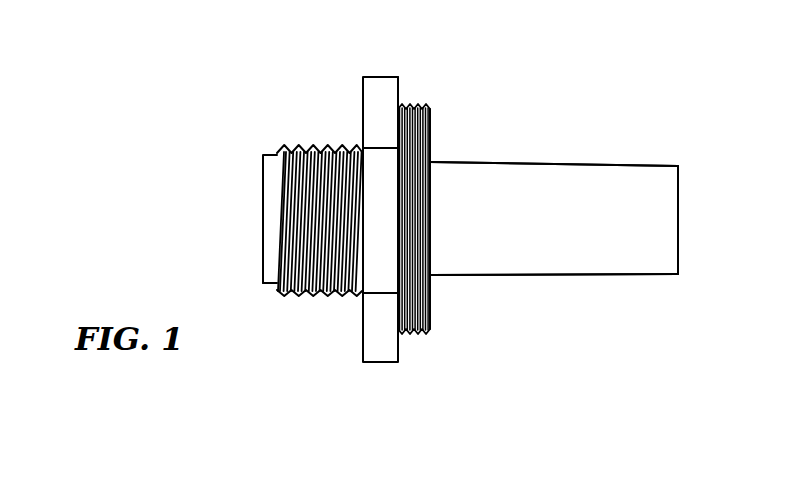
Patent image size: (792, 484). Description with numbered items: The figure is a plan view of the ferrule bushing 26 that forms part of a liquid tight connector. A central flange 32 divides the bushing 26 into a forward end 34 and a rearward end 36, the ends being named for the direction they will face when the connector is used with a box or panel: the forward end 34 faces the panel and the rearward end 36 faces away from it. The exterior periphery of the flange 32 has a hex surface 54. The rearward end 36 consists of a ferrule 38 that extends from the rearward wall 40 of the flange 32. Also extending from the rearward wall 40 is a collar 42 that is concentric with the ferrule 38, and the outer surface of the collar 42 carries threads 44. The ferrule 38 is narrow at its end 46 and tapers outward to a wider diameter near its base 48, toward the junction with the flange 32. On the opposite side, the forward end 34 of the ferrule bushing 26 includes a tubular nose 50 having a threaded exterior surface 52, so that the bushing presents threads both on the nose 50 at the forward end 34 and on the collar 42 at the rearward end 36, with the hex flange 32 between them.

The ferrule bushing 26 is at (567, 113).
The flange 32 is at (378, 88).
The forward end 34 is at (263, 200).
The rearward end 36 is at (678, 215).
The ferrule 38 is at (577, 231).
The rearward wall 40 is at (398, 88).
The collar 42 is at (428, 138).
The threads 44 is at (418, 337).
The end of ferrule 46 is at (639, 180).
The base of ferrule 48 is at (477, 260).
The tubular nose 50 is at (274, 257).
The threaded exterior surface 52 is at (295, 144).
The hex surface 54 is at (383, 333).